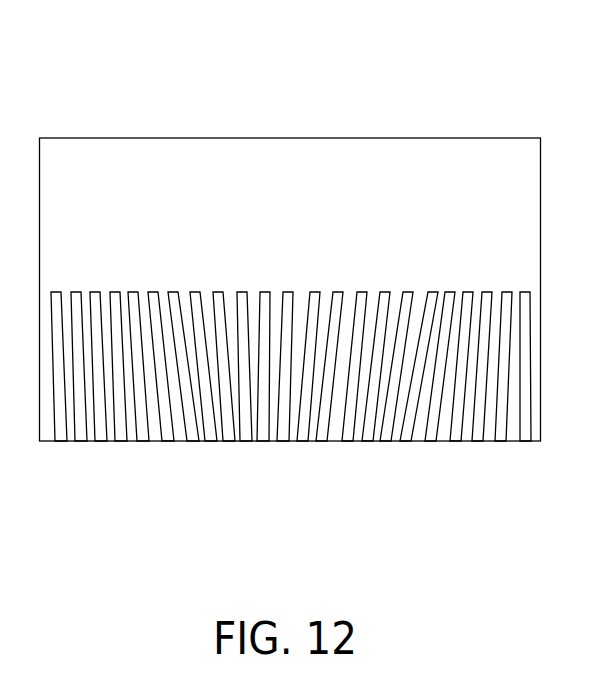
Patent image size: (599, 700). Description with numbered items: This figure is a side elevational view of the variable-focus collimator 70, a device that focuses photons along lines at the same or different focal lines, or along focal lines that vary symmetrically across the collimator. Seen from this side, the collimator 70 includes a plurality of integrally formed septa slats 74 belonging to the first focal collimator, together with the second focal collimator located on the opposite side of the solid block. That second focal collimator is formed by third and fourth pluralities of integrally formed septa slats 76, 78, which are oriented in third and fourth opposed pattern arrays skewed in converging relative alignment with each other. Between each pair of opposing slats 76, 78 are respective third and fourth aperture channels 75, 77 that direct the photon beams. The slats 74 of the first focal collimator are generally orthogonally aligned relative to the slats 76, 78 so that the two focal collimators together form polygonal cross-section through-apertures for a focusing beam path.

The variable-focus collimator 70 is at (290, 309).
The second plurality of integrally formed septa slats 74 is at (112, 162).
The third aperture channels 75 is at (107, 290).
The third plurality of integrally formed septa slats 76 is at (170, 295).
The fourth aperture channels 77 is at (370, 297).
The fourth plurality of integrally formed septa slats 78 is at (414, 262).